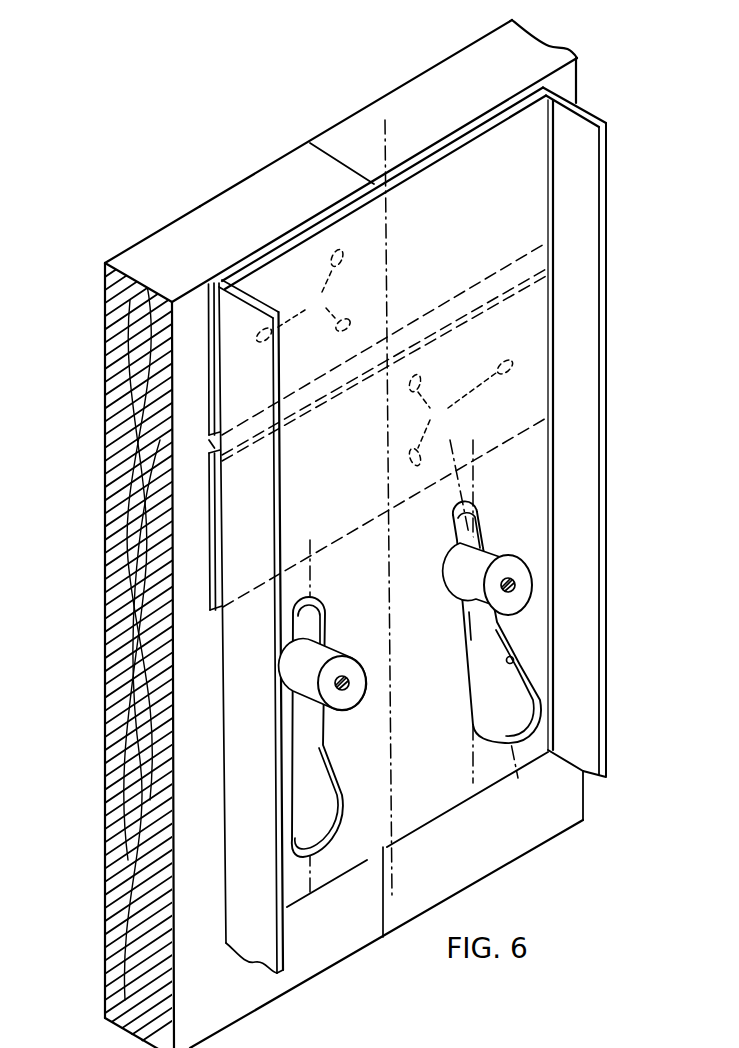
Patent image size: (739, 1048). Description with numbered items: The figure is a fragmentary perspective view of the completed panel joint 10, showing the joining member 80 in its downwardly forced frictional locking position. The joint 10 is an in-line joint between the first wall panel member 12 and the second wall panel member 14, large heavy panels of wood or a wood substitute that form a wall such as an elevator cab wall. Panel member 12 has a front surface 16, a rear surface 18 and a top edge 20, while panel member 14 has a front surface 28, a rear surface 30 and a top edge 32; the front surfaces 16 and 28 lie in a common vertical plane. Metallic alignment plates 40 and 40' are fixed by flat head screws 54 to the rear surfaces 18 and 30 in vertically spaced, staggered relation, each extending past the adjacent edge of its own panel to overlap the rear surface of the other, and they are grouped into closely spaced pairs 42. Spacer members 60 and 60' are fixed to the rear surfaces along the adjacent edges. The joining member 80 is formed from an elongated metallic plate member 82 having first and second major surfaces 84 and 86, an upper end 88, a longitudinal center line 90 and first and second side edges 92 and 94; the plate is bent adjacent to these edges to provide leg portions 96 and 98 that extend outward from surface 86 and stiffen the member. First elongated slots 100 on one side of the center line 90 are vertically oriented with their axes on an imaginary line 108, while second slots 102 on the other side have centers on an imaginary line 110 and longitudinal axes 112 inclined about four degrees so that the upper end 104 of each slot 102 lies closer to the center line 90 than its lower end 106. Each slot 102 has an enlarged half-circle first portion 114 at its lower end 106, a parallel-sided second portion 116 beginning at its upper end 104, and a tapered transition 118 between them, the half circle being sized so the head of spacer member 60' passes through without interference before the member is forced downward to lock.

The panel joint 10 is at (104, 753).
The first wall panel member 12 is at (243, 182).
The second wall panel member 14 is at (430, 67).
The front major flat surface 16 is at (196, 210).
The rear major flat surface 18 is at (184, 306).
The top edge 20 is at (149, 247).
The first major flat surface 28 is at (374, 103).
The second major flat surface 30 is at (567, 78).
The top edge 32 is at (480, 50).
The alignment plate 40 is at (199, 359).
The alignment plate 40' is at (202, 530).
The pair of alignment plates 42 is at (213, 447).
The flat head screws 54 is at (385, 425).
The spacer member 60 is at (323, 665).
The spacer member 60' is at (487, 569).
The joining member 80 is at (226, 823).
The elongated metallic plate member 82 is at (262, 223).
The first major flat surface 84 is at (248, 254).
The second major flat surface 86 is at (332, 233).
The upper end 88 is at (447, 148).
The longitudinal center line 90 is at (389, 238).
The first side edge 92 is at (285, 356).
The second side edge 94 is at (598, 351).
The leg portion 96 is at (226, 697).
The leg portion 98 is at (562, 492).
The first elongated slots 100 is at (323, 734).
The second elongated slots 102 is at (503, 622).
The upper end of slot 104 is at (455, 508).
The lower end of slot 106 is at (497, 644).
The imaginary line 108 is at (311, 573).
The imaginary line 110 is at (476, 466).
The longitudinal axis of slot 112 is at (504, 710).
The enlarged first portion 114 is at (487, 697).
The second portion 116 is at (470, 612).
The tapered transition portion 118 is at (514, 660).